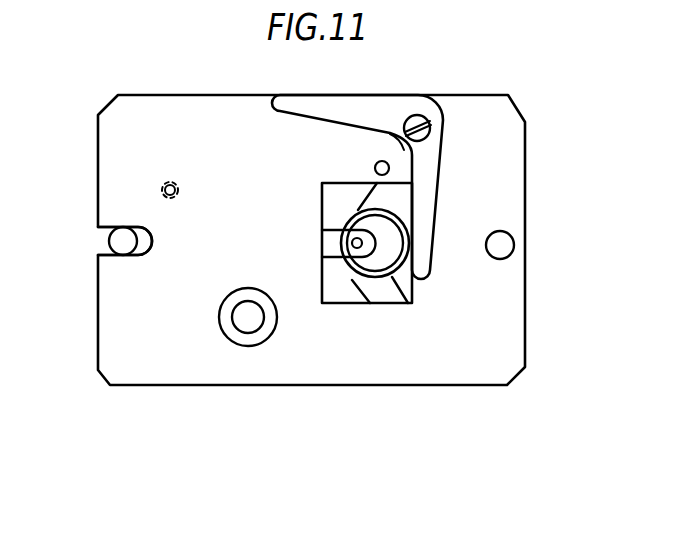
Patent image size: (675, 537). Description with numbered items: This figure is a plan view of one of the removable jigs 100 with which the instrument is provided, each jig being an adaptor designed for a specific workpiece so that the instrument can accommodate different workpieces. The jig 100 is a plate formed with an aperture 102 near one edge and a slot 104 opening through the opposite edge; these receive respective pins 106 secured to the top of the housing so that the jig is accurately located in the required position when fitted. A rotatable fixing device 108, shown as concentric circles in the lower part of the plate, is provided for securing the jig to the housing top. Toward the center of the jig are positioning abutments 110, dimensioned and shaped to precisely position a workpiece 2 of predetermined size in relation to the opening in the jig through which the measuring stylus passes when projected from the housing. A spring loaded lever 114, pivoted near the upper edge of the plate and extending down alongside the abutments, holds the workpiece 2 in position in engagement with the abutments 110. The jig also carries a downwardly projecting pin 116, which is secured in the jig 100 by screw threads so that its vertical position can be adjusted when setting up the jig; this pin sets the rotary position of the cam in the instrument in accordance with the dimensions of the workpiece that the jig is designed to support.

The workpiece 2 is at (400, 303).
The jig 100 is at (210, 94).
The aperture 102 is at (513, 242).
The slot 104 is at (108, 235).
The pins 106 is at (114, 238).
The rotatable fixing device 108 is at (240, 321).
The positioning abutments 110 is at (332, 192).
The spring loaded lever 114 is at (345, 103).
The downwardly projecting pin 116 is at (174, 184).